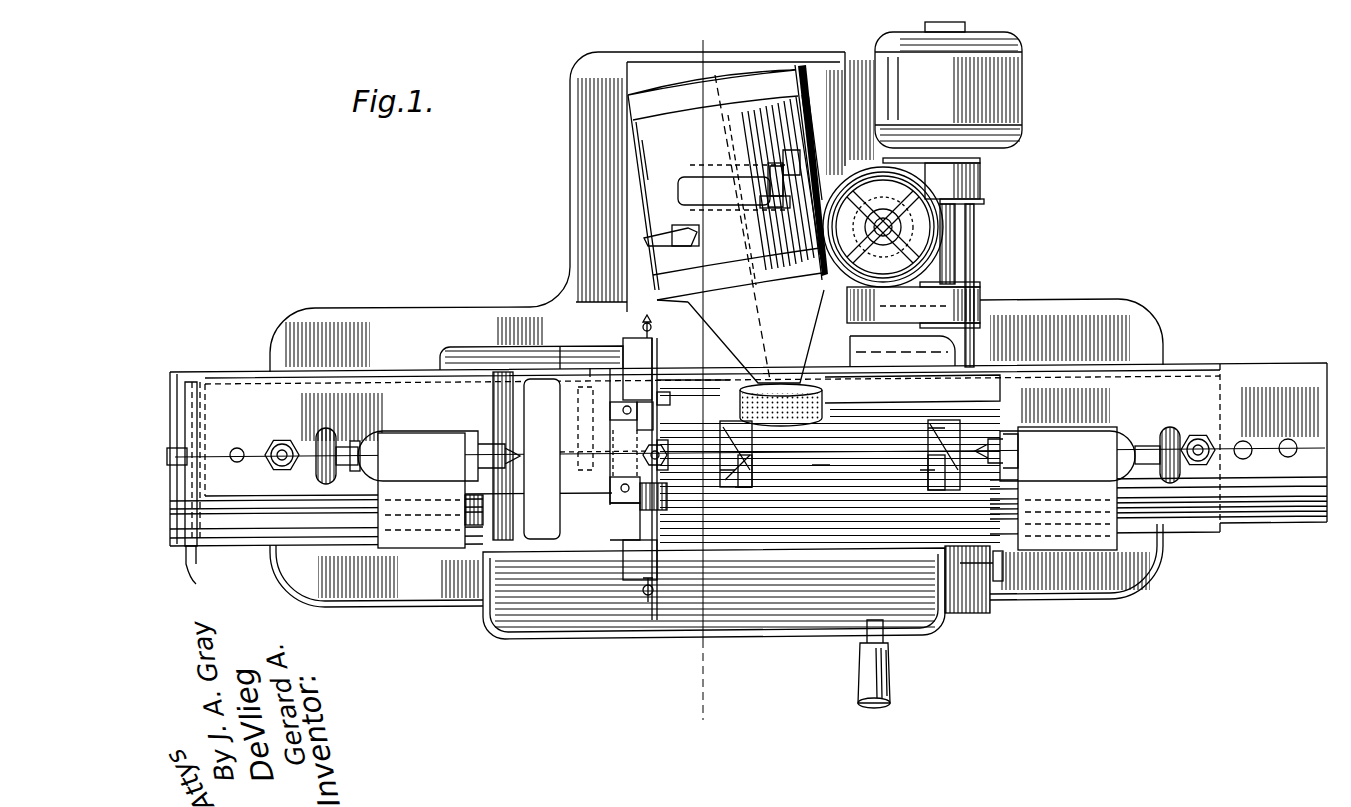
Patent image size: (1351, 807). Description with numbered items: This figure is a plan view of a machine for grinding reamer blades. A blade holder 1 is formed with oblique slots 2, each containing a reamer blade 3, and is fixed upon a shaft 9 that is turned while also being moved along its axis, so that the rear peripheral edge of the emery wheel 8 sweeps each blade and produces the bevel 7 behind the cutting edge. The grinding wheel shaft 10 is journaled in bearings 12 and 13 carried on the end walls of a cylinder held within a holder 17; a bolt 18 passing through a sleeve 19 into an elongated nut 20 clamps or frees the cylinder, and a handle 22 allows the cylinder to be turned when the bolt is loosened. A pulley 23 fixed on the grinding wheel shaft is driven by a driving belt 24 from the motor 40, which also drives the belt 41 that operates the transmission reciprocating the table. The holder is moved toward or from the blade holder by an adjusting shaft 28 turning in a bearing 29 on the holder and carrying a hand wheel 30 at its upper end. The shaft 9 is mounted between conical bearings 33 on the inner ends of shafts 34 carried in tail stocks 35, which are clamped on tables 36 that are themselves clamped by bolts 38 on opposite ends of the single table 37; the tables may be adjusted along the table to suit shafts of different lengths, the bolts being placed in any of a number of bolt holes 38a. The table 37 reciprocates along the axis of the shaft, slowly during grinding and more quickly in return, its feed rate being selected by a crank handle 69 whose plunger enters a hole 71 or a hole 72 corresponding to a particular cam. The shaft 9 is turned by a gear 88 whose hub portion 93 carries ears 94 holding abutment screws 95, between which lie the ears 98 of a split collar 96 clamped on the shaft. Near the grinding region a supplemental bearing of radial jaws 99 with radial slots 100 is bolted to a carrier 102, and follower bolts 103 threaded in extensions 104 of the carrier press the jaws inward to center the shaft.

The blade holder 1 is at (754, 448).
The slots 2 is at (720, 470).
The reamer blade 3 is at (742, 490).
The bevel 7 is at (920, 445).
The emery wheel 8 is at (742, 396).
The shaft 9 is at (536, 452).
The grinding wheel shaft 10 is at (1087, 130).
The bearing 12 is at (842, 62).
The bearing 13 is at (730, 255).
The holder 17 is at (652, 141).
The bolt 18 is at (803, 148).
The sleeve 19 is at (785, 168).
The elongated nut 20 is at (680, 192).
The handle 22 is at (645, 236).
The pulley 23 is at (766, 164).
The driving belt 24 is at (982, 186).
The adjusting shaft 28 is at (897, 222).
The bearing 29 is at (935, 268).
The wheel 30 is at (925, 250).
The conical bearings 33 is at (510, 453).
The shafts 34 is at (1035, 416).
The tail stocks 35 is at (418, 441).
The tables 36 is at (1286, 440).
The table 37 is at (805, 500).
The bolts 38 is at (282, 440).
The bolt holes 38a is at (250, 437).
The motor 40 is at (1003, 80).
The belt 41 is at (907, 310).
The crank handle 69 is at (195, 440).
The hole 71 is at (187, 565).
The hole 72 is at (208, 463).
The gear 88 is at (580, 361).
The sleeve or hub portion 93 is at (608, 479).
The ears 94 is at (625, 425).
The abutment screws 95 is at (670, 392).
The split collar 96 is at (630, 435).
The ear 98 is at (635, 505).
The radial jaws 99 is at (670, 400).
The radial slots 100 is at (657, 360).
The carrier 102 is at (566, 350).
The follower bolts 103 is at (640, 330).
The extensions 104 is at (660, 478).